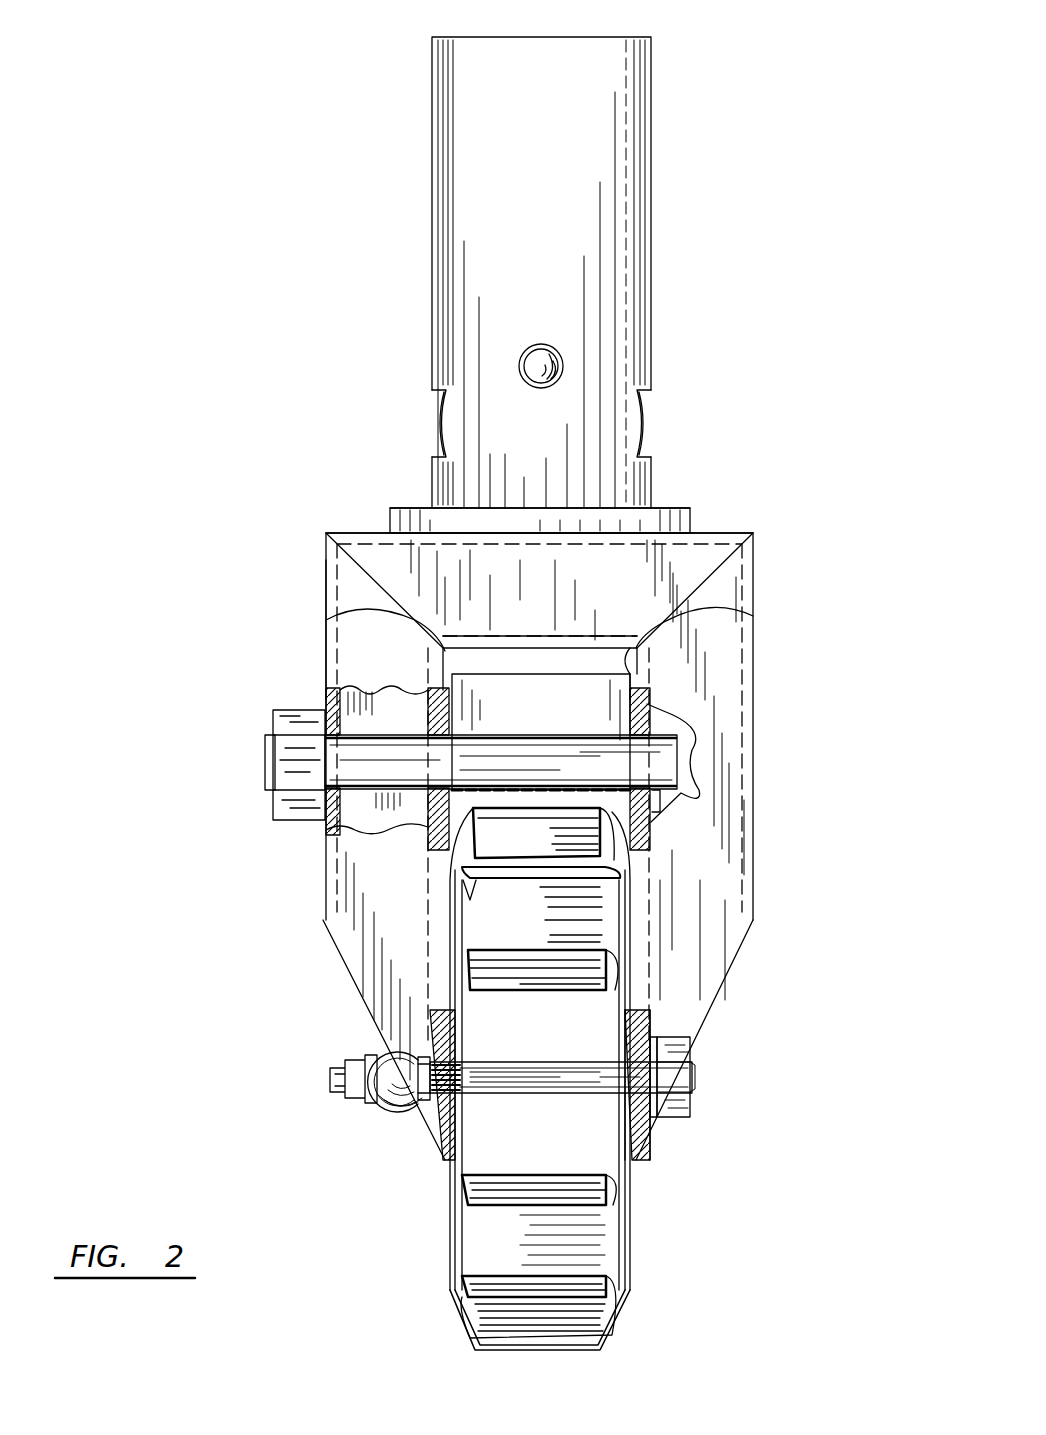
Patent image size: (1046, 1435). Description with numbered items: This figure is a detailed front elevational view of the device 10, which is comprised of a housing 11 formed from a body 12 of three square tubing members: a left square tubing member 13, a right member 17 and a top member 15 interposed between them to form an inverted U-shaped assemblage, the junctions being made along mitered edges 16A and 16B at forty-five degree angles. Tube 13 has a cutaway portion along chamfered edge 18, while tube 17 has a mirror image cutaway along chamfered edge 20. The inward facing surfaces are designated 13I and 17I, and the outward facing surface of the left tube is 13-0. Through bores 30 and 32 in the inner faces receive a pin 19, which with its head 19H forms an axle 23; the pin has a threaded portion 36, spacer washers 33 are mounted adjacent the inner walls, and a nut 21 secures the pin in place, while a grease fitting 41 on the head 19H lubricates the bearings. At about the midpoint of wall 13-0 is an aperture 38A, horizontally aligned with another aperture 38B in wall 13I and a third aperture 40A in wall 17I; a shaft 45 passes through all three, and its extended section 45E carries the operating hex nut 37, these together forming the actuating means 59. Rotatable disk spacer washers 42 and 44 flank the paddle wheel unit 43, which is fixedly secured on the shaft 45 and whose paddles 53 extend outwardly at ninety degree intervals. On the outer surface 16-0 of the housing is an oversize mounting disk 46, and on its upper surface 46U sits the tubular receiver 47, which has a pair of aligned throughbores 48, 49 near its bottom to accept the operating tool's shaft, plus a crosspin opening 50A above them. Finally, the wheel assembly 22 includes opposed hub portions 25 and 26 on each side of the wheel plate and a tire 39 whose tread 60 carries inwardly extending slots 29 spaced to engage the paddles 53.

The device 10 is at (305, 322).
The housing 11 is at (798, 525).
The body 12 is at (318, 522).
The left square tubing member 13 is at (396, 678).
The inward facing surface of tube 13 13I is at (360, 610).
The outward facing surface of tube 13 13-0 is at (326, 655).
The top member 15 is at (631, 604).
The outer surface of housing 16-0 is at (392, 510).
The mitered edge 16A is at (345, 556).
The mitered edge 16B is at (735, 558).
The right square tubing member 17 is at (706, 929).
The inward facing surface of tube 17 17I is at (745, 620).
The chamfered edge 18 is at (360, 975).
The pin 19 is at (396, 1118).
The head of pin 19H is at (384, 1100).
The chamfered edge 20 is at (733, 962).
The nut 21 is at (660, 1112).
The wheel assembly 22 is at (486, 1355).
The axle 23 is at (420, 1058).
The hub portion 25 is at (447, 1185).
The hub portion 26 is at (640, 1152).
The slots 29 is at (597, 1282).
The through bore 30 is at (432, 1150).
The through bore 32 is at (640, 1030).
The spacer washer 33 is at (653, 1125).
The threaded portion 36 is at (690, 1086).
The hex nut 37 is at (272, 812).
The aperture 38A is at (330, 822).
The aperture 38B is at (436, 826).
The tire 39 is at (555, 1351).
The aperture 40A is at (648, 816).
The grease fitting 41 is at (340, 1076).
The rotatable disk spacer washer 42 is at (445, 855).
The paddle wheel unit 43 is at (640, 674).
The rotatable disk spacer washer 44 is at (645, 712).
The shaft 45 is at (335, 716).
The extended section of shaft 45E is at (265, 758).
The oversize mounting disk 46 is at (690, 528).
The upper surface of disk 46U is at (680, 508).
The tubular receiver 47 is at (648, 168).
The throughbore 48 is at (432, 418).
The throughbore 49 is at (651, 418).
The crosspin opening 50A is at (558, 355).
The paddles 53 is at (560, 713).
The actuating means 59 is at (270, 705).
The tread 60 is at (615, 1318).